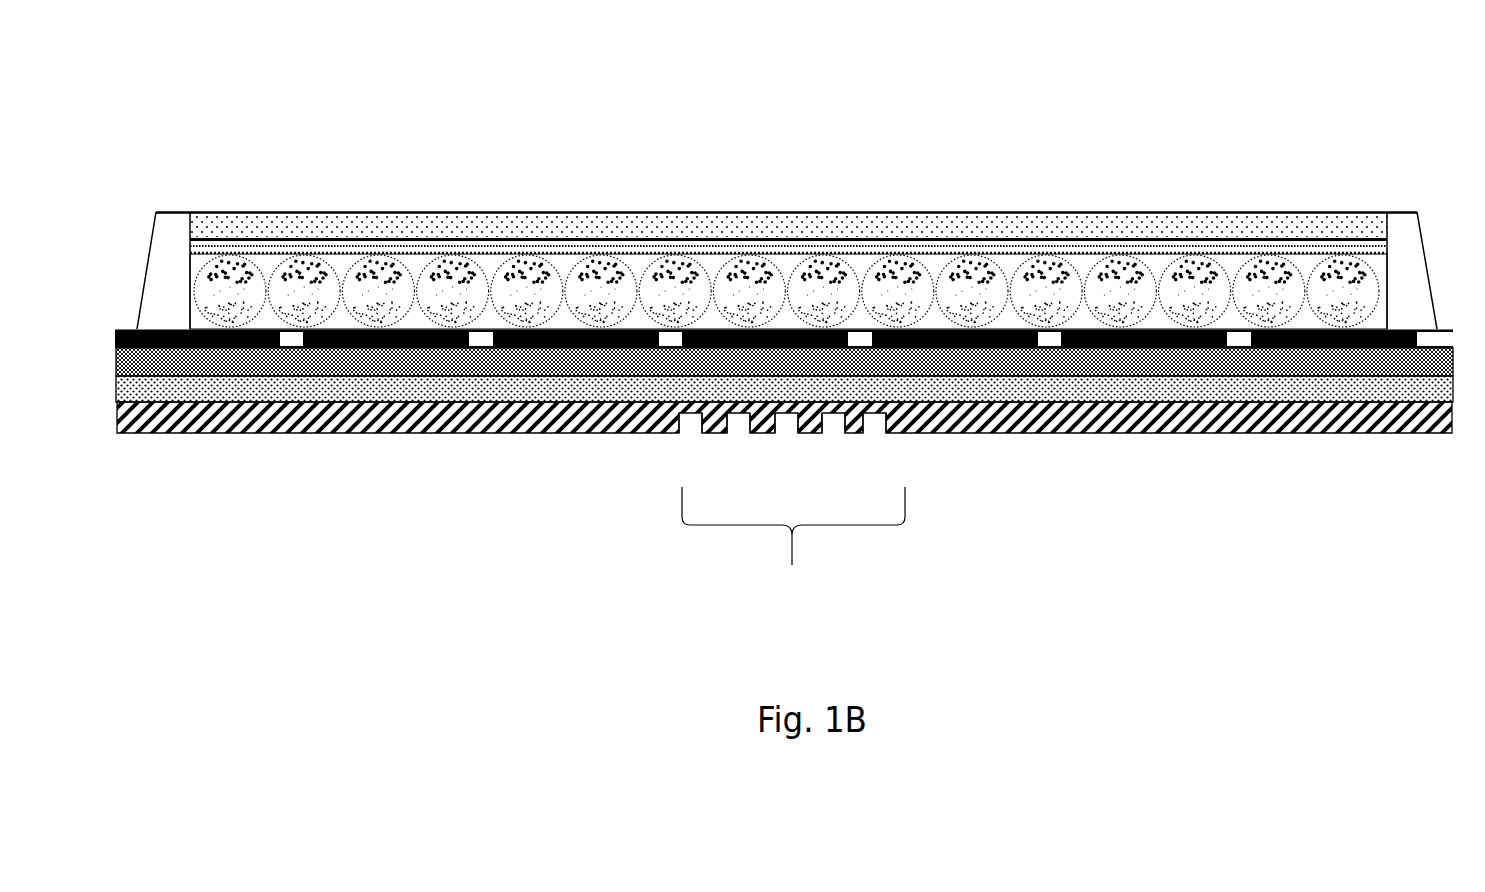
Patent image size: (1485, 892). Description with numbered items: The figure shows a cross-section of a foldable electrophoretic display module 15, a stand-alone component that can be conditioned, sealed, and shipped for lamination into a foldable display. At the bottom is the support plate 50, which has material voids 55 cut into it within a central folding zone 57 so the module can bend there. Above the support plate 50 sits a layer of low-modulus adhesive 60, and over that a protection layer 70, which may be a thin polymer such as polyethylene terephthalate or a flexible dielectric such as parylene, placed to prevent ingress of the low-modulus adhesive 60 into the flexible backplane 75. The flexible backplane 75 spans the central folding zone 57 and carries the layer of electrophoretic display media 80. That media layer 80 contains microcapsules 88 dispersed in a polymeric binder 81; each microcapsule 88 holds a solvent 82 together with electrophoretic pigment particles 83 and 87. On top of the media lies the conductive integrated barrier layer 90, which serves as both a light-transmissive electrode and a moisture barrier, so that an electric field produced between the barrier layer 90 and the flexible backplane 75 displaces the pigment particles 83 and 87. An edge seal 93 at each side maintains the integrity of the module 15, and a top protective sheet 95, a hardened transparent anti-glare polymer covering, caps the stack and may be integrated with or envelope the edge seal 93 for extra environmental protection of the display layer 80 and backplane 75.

The foldable electrophoretic display module 15 is at (369, 64).
The edge seal 93 is at (170, 263).
The top protective sheet 95 is at (1295, 217).
The conductive integrated barrier layer 90 is at (1227, 242).
The microcapsules 88 is at (1117, 255).
The layer of electrophoretic display media 80 is at (710, 333).
The polymeric binder 81 is at (862, 322).
The solvent 82 is at (953, 297).
The electrophoretic pigment particles 83 is at (1038, 305).
The electrophoretic pigment particles 87 is at (1050, 262).
The flexible backplane 75 is at (330, 338).
The protection layer 70 is at (610, 362).
The layer of low-modulus adhesive 60 is at (515, 388).
The support plate 50 is at (393, 420).
The material voids 55 is at (875, 425).
The central folding zone 57 is at (793, 553).